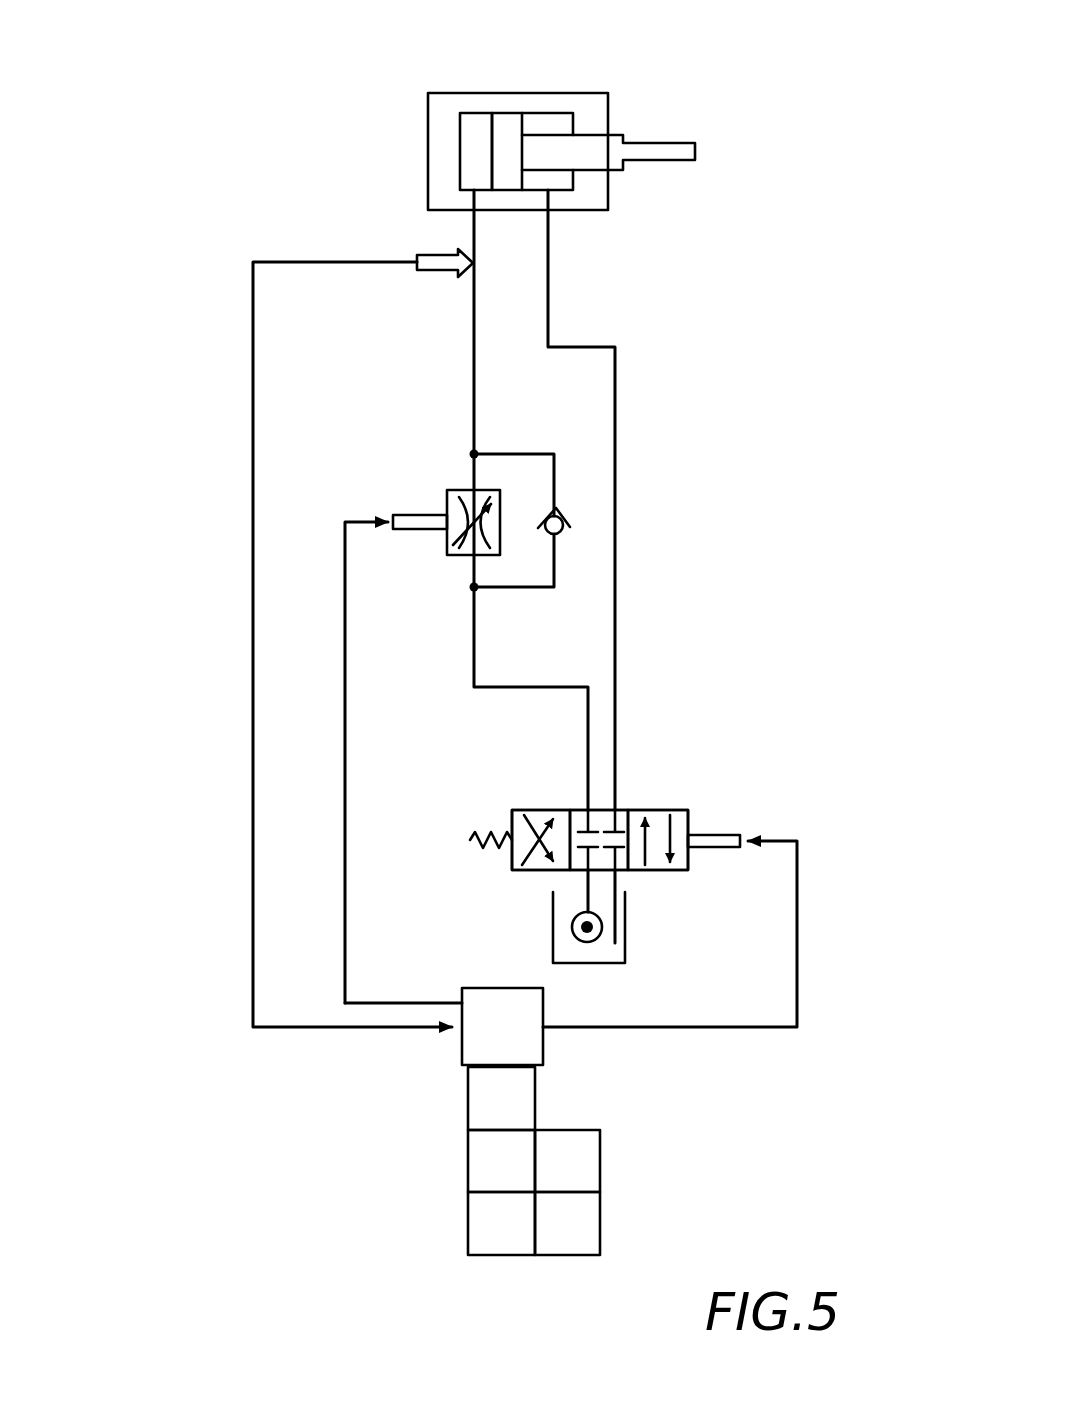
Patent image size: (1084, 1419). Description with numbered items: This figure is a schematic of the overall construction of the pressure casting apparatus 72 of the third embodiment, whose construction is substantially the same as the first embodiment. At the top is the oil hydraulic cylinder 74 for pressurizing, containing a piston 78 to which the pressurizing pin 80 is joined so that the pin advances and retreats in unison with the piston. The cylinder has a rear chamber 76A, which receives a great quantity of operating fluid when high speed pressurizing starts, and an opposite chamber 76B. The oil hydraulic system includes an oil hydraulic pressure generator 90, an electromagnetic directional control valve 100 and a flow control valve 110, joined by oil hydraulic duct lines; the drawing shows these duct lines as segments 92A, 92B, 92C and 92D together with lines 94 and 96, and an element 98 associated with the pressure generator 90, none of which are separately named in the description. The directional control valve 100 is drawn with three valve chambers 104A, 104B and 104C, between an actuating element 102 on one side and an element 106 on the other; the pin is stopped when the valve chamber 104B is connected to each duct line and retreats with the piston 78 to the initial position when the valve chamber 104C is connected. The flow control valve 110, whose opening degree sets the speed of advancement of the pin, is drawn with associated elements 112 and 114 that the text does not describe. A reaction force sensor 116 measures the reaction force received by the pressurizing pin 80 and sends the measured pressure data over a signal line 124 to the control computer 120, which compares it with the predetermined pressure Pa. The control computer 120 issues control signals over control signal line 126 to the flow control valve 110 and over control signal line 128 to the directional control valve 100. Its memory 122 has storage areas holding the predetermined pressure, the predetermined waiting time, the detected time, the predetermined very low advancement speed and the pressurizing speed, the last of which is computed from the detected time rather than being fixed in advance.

The pressure casting apparatus 72 is at (291, 122).
The oil hydraulic cylinder for pressurizing 74 is at (587, 107).
The rear chamber 76A is at (478, 127).
The second cylinder chamber 76B is at (557, 180).
The piston 78 is at (505, 125).
The pressurizing pin 80 is at (660, 152).
The oil hydraulic pressure generator 90 is at (570, 923).
The supply line segment 92A is at (580, 887).
The supply line segment 92B is at (474, 637).
The bypass line segment 92C is at (554, 565).
The supply line segment 92D is at (473, 358).
The return line 94 is at (615, 380).
The tank line 96 is at (623, 882).
The reservoir tank 98 is at (582, 965).
The electromagnetic directional control valve 100 is at (618, 759).
The solenoid actuator 102 is at (710, 845).
The first valve position 104A is at (680, 810).
The valve chamber 104B is at (620, 808).
The valve chamber 104C is at (520, 810).
The return spring 106 is at (473, 843).
The flow control valve 110 is at (457, 490).
The flow control actuator 112 is at (410, 515).
The check valve 114 is at (562, 515).
The reaction force sensor 116 is at (435, 260).
The control computer 120 is at (543, 1045).
The memory 122 is at (465, 1072).
The signal line 124 is at (253, 455).
The control signal line 126 is at (345, 660).
The control signal line 128 is at (795, 937).